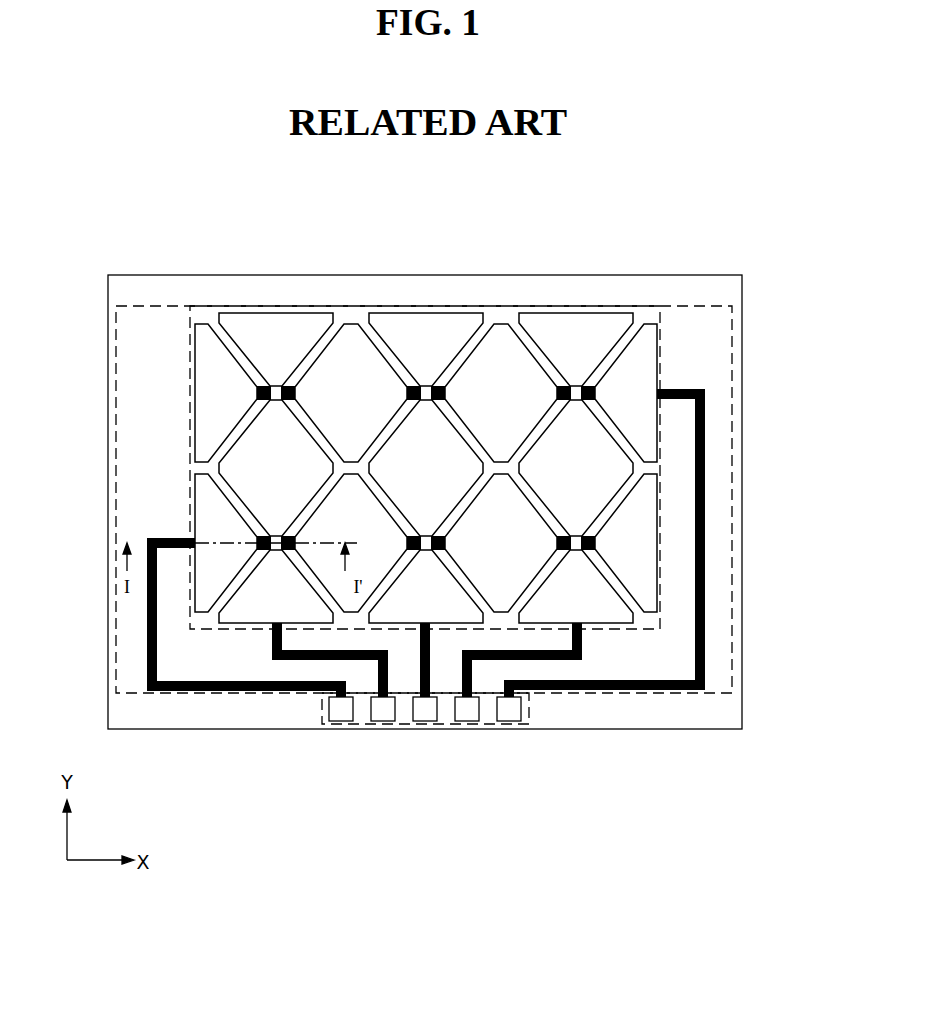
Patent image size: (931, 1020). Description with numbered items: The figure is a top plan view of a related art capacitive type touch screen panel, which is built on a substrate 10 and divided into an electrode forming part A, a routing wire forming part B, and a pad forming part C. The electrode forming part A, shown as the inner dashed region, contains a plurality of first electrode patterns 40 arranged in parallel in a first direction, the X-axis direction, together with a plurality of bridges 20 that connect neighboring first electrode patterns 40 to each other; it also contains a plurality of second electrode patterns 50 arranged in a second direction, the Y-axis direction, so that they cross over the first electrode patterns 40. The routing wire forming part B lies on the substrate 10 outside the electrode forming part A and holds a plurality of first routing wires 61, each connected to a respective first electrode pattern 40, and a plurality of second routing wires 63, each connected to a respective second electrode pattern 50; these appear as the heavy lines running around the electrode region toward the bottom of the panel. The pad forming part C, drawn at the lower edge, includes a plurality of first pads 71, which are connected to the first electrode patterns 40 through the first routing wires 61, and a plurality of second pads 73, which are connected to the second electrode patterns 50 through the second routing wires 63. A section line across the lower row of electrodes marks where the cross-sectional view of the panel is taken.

The substrate 10 is at (728, 708).
The bridge 20 is at (436, 385).
The first electrode pattern 40 is at (352, 345).
The second electrode pattern 50 is at (275, 330).
The first routing wire 61 is at (147, 640).
The second routing wire 63 is at (363, 661).
The first pad 71 is at (342, 713).
The second pad 73 is at (384, 713).
The electrode forming part A is at (229, 306).
The routing wire forming part B is at (156, 306).
The pad forming part C is at (321, 716).